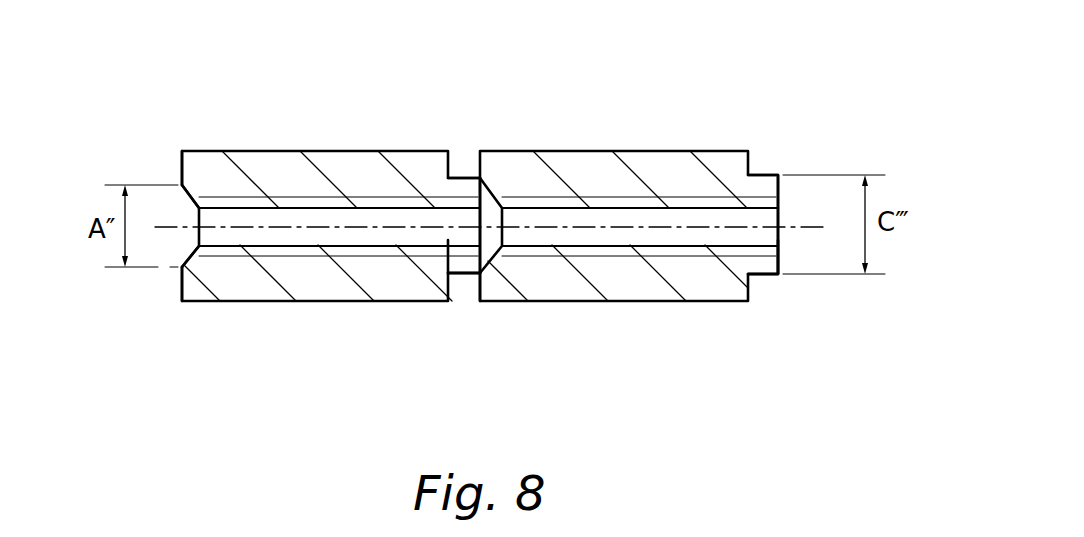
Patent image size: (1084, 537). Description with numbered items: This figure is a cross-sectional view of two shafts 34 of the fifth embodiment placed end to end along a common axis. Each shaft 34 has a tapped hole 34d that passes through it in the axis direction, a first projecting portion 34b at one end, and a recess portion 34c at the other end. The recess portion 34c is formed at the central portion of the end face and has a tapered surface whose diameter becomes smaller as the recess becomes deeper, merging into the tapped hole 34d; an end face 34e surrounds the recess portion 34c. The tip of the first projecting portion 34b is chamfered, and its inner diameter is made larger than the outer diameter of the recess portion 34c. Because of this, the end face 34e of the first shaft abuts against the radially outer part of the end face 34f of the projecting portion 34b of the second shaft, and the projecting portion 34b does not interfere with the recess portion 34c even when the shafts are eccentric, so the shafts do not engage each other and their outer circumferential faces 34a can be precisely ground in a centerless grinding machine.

The shaft 34 is at (473, 205).
The outer circumferential face 34a is at (317, 151).
The first projecting portion 34b is at (458, 185).
The recess portion 34c is at (190, 265).
The tapped hole 34d is at (338, 247).
The end face 34e is at (182, 165).
The end face of the first projecting portion 34f is at (484, 190).